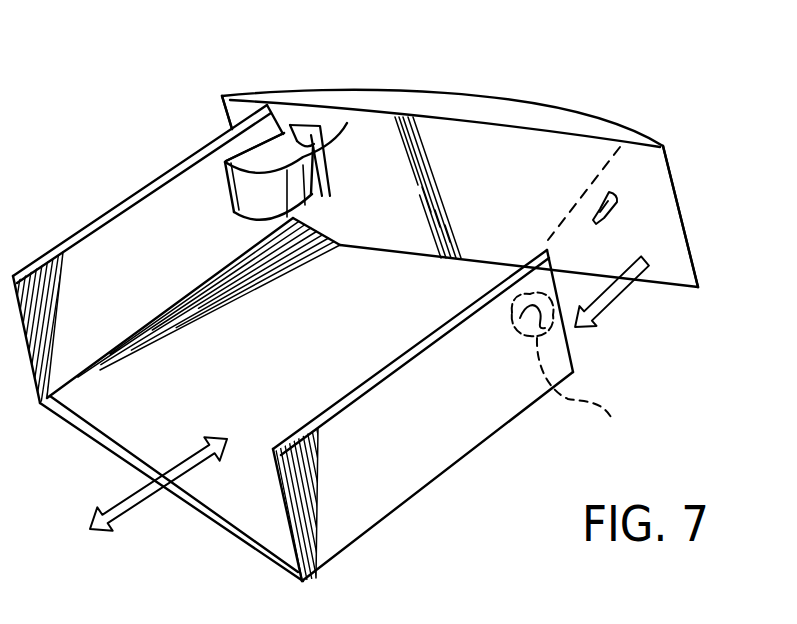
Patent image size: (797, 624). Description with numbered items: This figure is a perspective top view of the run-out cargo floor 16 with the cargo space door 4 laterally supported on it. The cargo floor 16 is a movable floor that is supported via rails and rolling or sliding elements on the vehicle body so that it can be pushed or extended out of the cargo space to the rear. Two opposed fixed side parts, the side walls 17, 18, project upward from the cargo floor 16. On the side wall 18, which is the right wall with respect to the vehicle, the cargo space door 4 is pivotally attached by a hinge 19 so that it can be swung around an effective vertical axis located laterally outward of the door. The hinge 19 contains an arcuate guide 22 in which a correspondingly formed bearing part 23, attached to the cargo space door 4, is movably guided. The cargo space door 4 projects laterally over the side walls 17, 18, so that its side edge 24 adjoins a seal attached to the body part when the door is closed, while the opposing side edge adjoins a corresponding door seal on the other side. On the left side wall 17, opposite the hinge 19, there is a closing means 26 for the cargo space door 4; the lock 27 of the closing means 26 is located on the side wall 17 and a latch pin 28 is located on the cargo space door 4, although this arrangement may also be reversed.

The cargo space door 4 is at (572, 105).
The cargo floor 16 is at (263, 514).
The side wall 17 is at (437, 427).
The side wall 18 is at (123, 258).
The hinge 19 is at (268, 158).
The arcuate guide 22 is at (248, 192).
The bearing part 23 is at (347, 123).
The side edge 24 is at (226, 95).
The closing means 26 is at (622, 218).
The lock 27 is at (575, 369).
The latch pin 28 is at (620, 208).